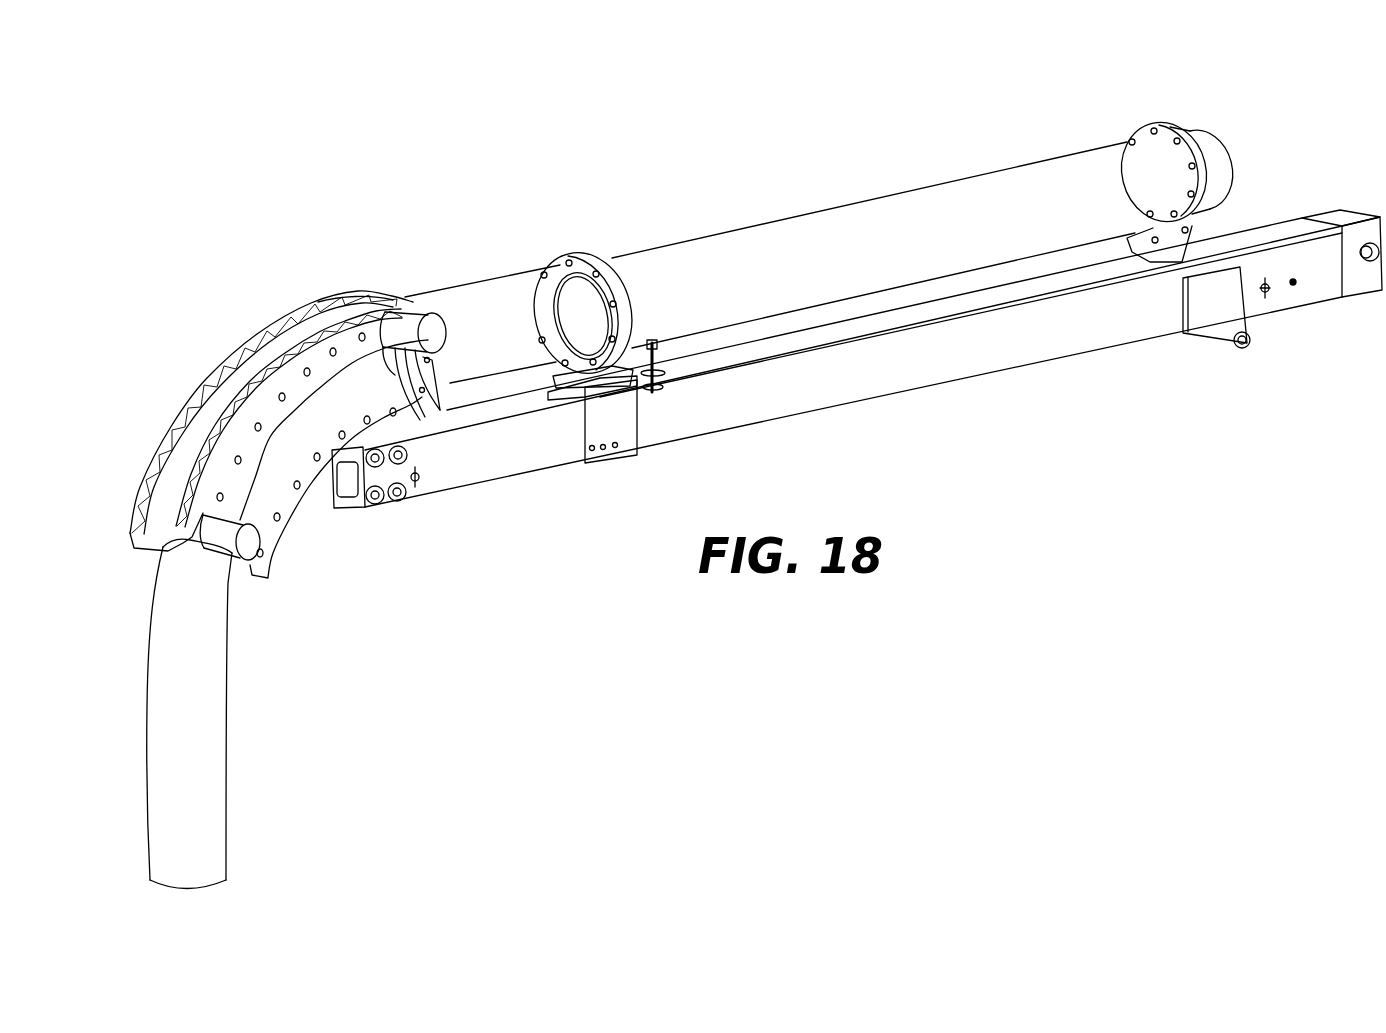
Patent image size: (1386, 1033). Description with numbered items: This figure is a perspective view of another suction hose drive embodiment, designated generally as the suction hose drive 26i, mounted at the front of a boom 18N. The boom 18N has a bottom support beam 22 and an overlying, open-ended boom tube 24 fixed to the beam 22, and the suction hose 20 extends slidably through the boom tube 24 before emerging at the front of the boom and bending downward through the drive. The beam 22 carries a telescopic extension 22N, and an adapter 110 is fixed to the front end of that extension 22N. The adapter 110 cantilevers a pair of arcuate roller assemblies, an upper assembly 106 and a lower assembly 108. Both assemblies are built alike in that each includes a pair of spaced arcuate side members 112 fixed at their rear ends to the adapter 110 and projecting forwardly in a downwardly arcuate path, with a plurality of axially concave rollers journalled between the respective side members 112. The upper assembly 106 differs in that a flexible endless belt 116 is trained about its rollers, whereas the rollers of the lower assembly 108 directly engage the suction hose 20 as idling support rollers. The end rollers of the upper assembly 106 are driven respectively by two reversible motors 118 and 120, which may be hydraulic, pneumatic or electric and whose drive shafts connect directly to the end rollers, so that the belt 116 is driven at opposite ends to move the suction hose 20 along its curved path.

The boom 18N is at (926, 174).
The boom tube 24 is at (864, 210).
The bottom support beam 22 is at (944, 362).
The telescopic extension 22N is at (514, 457).
The adapter 110 is at (427, 418).
The suction hose drive 26i is at (210, 362).
The upper arcuate roller assembly 106 is at (158, 446).
The flexible endless belt 116 is at (163, 506).
The lower arcuate roller assembly 108 is at (283, 542).
The arcuate side members 112 is at (367, 305).
The reversible motor 120 is at (405, 318).
The reversible motor 118 is at (237, 578).
The suction hose 20 is at (207, 710).